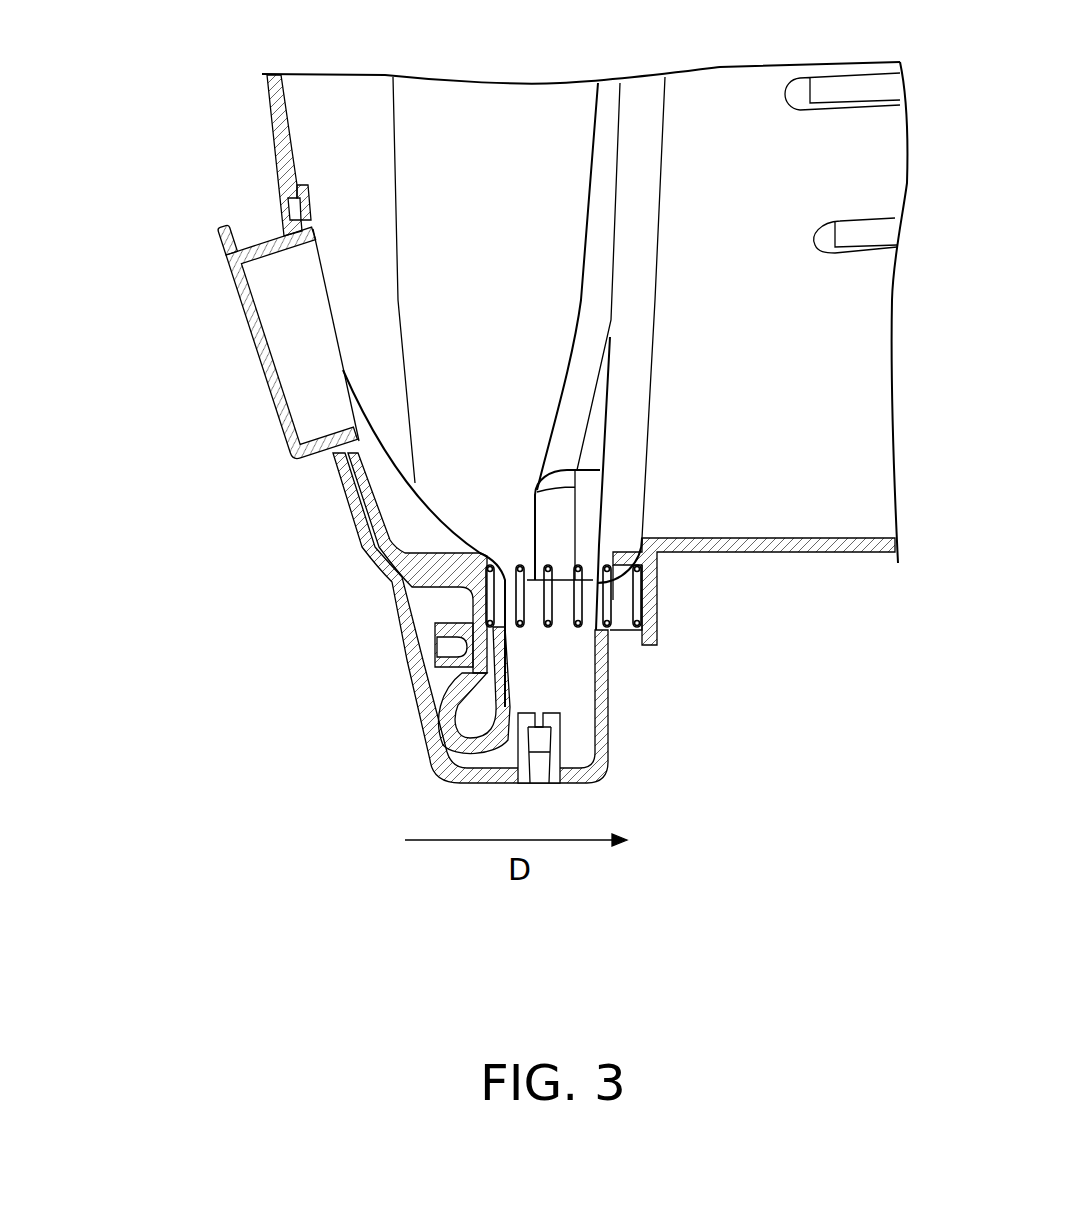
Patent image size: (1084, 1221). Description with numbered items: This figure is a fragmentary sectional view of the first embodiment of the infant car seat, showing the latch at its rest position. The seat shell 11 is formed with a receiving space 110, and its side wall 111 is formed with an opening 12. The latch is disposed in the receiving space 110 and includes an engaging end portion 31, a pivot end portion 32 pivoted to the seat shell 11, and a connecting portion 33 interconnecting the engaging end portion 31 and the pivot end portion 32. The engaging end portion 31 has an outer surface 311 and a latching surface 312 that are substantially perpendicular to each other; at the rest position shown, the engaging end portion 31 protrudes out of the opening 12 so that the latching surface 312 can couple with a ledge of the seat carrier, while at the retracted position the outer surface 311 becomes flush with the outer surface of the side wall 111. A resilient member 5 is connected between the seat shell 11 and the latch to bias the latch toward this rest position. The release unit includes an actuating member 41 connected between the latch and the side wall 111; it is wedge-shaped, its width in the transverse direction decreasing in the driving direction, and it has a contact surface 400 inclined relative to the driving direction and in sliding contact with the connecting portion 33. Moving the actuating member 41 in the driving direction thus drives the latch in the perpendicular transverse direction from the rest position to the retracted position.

The receiving space 110 is at (445, 160).
The side wall 111 is at (262, 101).
The seat shell 11 is at (193, 148).
The opening 12 is at (312, 223).
The engaging end portion 31 is at (419, 459).
The outer surface 311 is at (264, 304).
The latching surface 312 is at (277, 237).
The pivot end portion 32 is at (453, 737).
The connecting portion 33 is at (477, 655).
The contact surface 400 is at (381, 643).
The actuating member 41 is at (443, 632).
The resilient member 5 is at (578, 628).